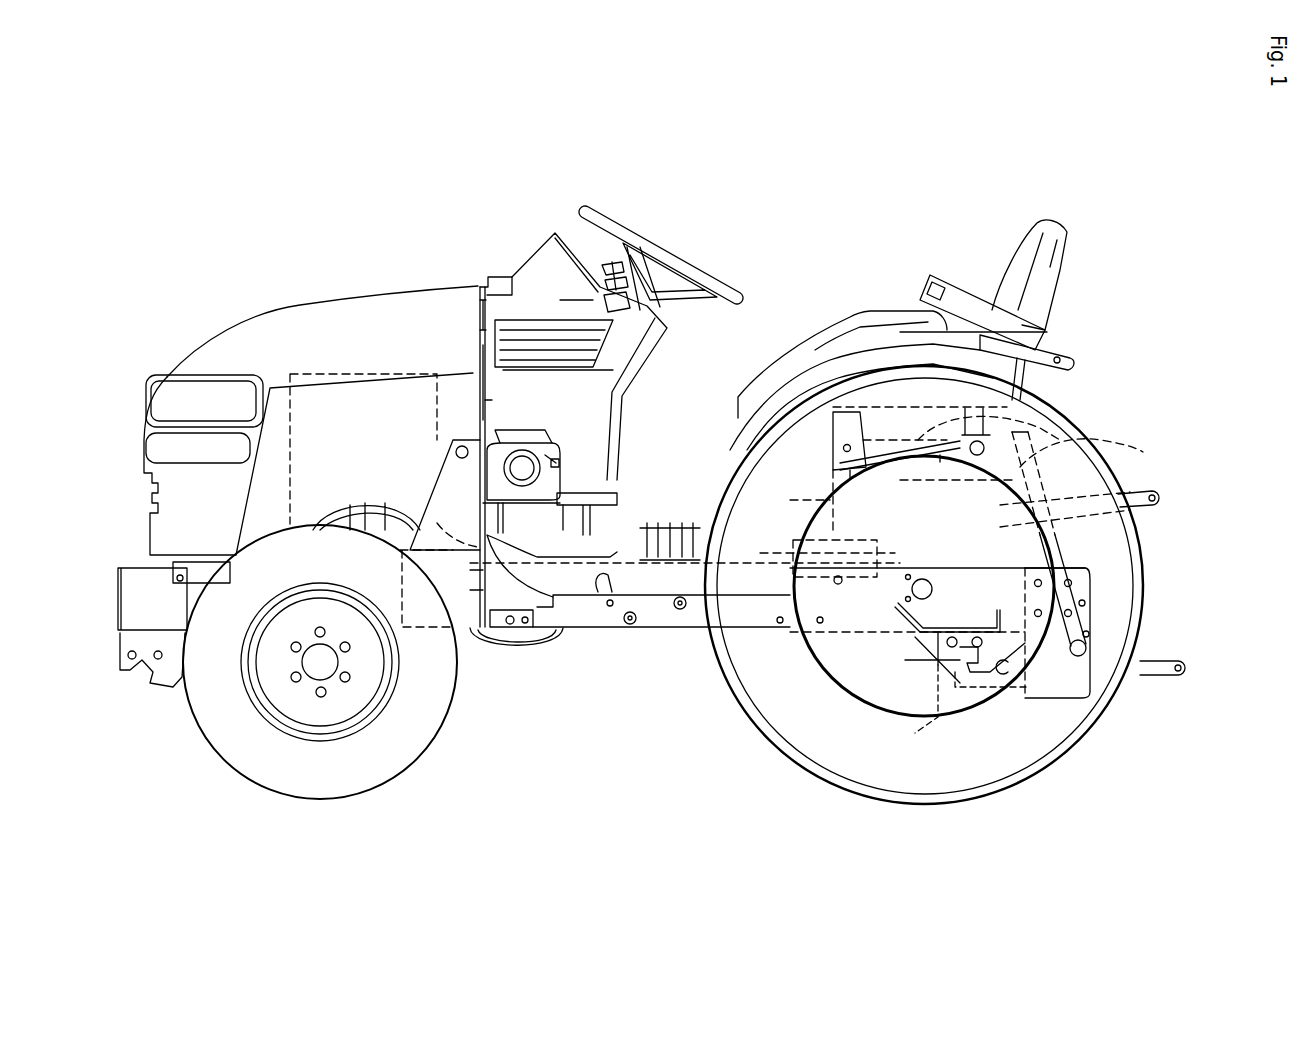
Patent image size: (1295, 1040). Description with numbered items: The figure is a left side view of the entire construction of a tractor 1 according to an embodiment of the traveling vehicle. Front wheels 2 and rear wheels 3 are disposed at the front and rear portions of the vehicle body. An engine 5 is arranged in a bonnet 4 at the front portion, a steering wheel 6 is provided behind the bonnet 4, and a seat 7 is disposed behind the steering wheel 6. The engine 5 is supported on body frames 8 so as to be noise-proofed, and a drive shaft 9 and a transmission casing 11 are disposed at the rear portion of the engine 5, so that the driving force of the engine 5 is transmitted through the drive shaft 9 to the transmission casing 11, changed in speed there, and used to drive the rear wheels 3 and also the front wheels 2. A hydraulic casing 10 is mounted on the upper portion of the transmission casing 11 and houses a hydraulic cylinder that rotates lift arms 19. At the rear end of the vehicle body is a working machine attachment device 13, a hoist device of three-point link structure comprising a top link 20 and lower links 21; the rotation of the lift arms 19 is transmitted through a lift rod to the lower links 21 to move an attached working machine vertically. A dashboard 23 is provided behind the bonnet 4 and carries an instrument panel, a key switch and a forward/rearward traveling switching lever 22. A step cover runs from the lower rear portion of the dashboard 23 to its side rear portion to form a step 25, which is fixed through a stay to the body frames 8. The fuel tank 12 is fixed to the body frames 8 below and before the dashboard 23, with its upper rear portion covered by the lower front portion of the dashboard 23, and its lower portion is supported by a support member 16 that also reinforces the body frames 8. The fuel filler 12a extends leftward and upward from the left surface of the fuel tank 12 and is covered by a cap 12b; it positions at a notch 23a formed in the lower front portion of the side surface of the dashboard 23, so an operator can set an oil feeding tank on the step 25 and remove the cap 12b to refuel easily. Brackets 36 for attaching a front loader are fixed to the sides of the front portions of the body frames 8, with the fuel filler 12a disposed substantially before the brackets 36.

The tractor 1 is at (378, 200).
The front wheels 2 is at (455, 704).
The rear wheels 3 is at (727, 683).
The bonnet 4 is at (300, 305).
The engine 5 is at (300, 374).
The steering wheel 6 is at (613, 215).
The seat 7 is at (1017, 245).
The body frames 8 is at (613, 630).
The drive shaft 9 is at (790, 540).
The hydraulic casing 10 is at (1088, 483).
The transmission casing 11 is at (899, 625).
The fuel tank 12 is at (583, 603).
The fuel filler 12a is at (557, 465).
The cap 12b is at (553, 430).
The working machine attachment device 13 is at (1194, 392).
The support member 16 is at (610, 613).
The lift arms 19 is at (1010, 435).
The top link 20 is at (1147, 503).
The lower links 21 is at (1164, 678).
The forward/rearward traveling switching lever 22 is at (600, 265).
The dashboard 23 is at (521, 255).
The notch 23a is at (478, 427).
The step 25 is at (633, 517).
The brackets 36 is at (470, 542).